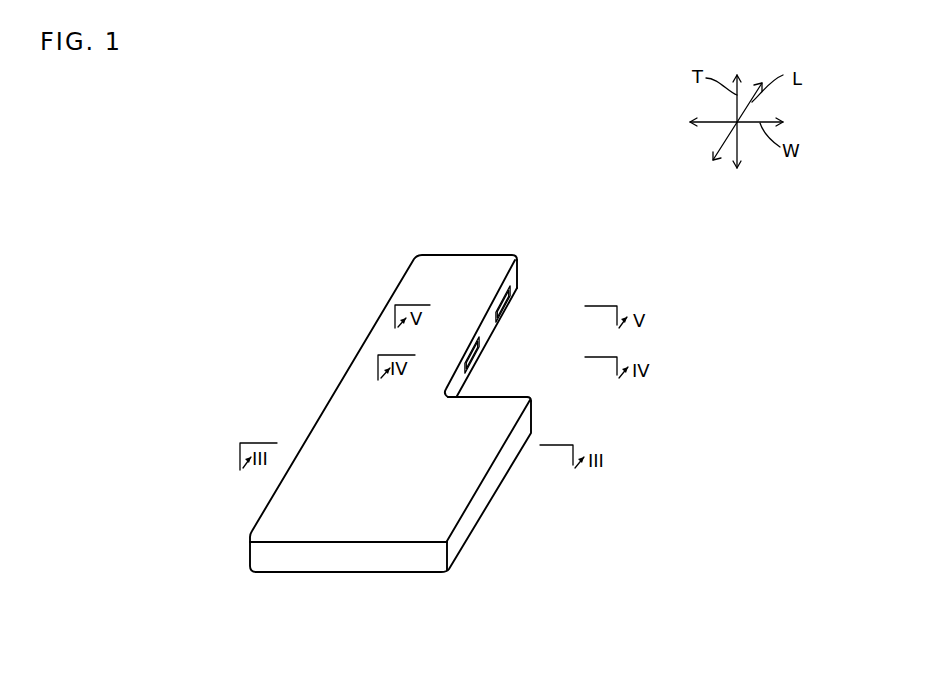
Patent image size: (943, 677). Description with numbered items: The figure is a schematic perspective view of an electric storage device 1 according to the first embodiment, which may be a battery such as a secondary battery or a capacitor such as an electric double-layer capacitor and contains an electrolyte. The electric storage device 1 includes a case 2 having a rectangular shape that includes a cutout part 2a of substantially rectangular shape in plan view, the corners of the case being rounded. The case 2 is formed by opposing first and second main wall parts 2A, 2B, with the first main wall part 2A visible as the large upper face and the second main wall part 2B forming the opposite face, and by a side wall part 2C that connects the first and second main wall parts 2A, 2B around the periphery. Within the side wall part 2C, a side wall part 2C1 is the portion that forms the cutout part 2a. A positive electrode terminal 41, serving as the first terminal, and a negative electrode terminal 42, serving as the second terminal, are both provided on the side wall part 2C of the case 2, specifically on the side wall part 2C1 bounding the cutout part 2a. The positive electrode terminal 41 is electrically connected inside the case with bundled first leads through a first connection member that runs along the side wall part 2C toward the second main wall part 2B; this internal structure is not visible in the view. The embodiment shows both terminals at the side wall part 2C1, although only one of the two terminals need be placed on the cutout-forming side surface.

The electric storage device 1 is at (603, 200).
The case 2 is at (478, 513).
The first main wall part 2A is at (352, 412).
The second main wall part 2B is at (373, 572).
The side wall part 2C is at (460, 384).
The side wall part forming the cutout part 2C1 is at (513, 284).
The cutout part 2a is at (503, 394).
The positive electrode terminal 41 is at (485, 357).
The negative electrode terminal 42 is at (507, 312).